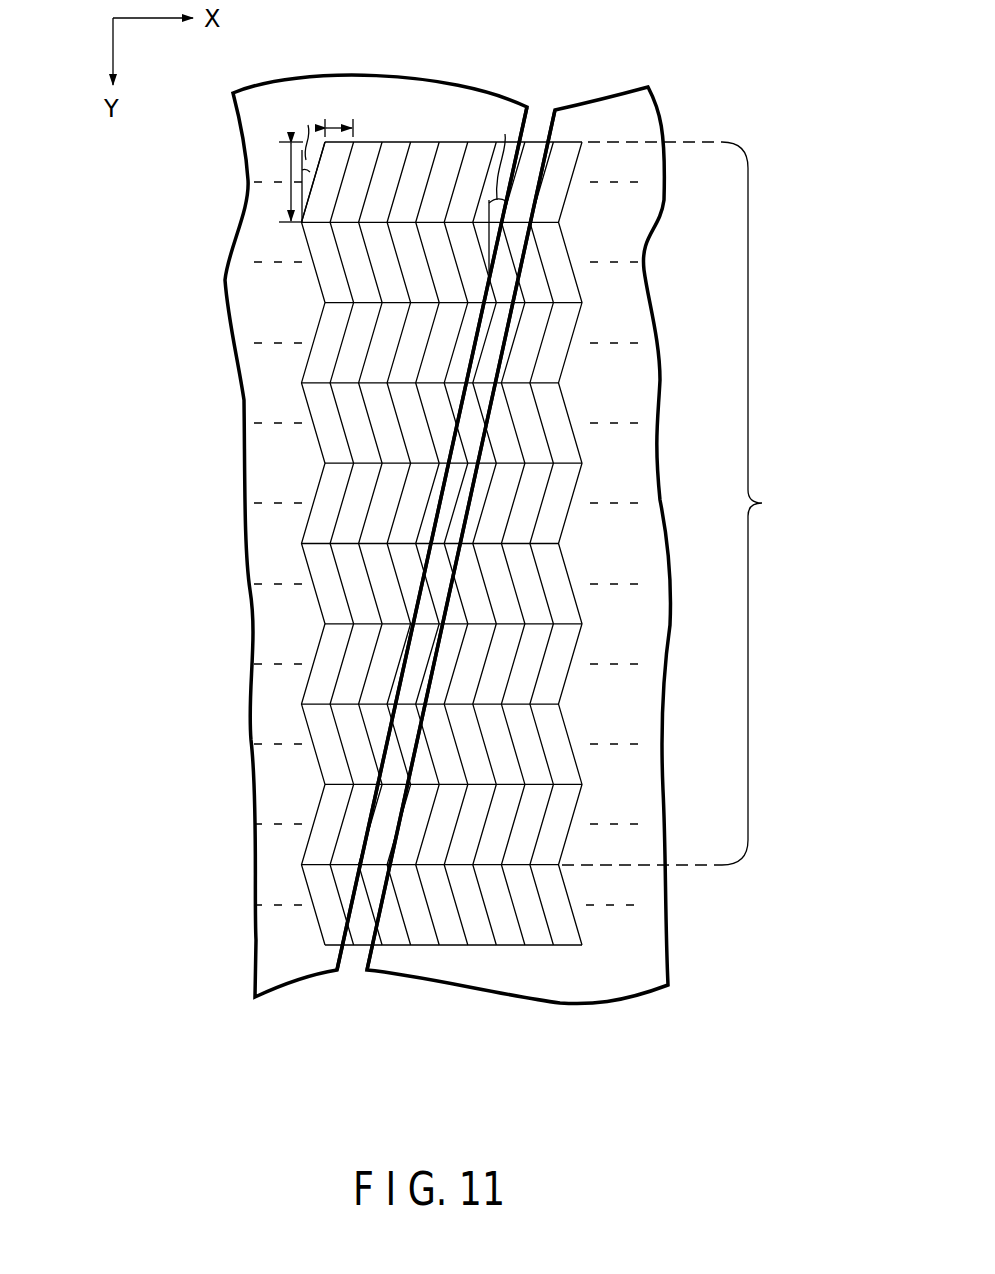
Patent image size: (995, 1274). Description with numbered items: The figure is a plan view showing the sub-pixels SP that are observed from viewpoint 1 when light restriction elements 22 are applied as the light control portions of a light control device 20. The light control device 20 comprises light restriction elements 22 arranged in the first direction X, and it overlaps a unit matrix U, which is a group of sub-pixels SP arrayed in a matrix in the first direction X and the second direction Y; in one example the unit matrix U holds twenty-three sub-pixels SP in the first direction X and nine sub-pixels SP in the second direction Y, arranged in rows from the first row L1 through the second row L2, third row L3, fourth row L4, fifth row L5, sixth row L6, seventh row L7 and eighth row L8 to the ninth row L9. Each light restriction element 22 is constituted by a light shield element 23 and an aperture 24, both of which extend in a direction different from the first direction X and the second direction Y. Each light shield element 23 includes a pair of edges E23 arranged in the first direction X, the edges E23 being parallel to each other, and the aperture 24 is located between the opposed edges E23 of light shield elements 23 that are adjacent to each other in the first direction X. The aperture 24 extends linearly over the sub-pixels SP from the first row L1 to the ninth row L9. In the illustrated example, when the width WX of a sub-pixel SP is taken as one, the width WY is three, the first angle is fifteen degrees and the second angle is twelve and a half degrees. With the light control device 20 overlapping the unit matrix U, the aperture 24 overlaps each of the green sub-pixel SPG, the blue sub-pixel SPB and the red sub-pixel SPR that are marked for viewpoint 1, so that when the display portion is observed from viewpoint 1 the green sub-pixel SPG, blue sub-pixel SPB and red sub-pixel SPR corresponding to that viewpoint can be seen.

The light control device 20 is at (504, 1052).
The light restriction element 22 is at (368, 1055).
The light shield element 23 is at (290, 975).
The aperture 24 is at (351, 972).
The edge E23 is at (505, 238).
The green sub-pixel SPG is at (540, 142).
The blue sub-pixel SPB is at (470, 403).
The red sub-pixel SPR is at (415, 645).
The viewpoint 1 is at (472, 543).
The unit matrix U is at (678, 503).
The first row L1 is at (213, 182).
The second row L2 is at (213, 262).
The third row L3 is at (213, 343).
The fourth row L4 is at (213, 423).
The fifth row L5 is at (213, 503).
The sixth row L6 is at (213, 584).
The seventh row L7 is at (213, 664).
The eighth row L8 is at (213, 744).
The ninth row L9 is at (213, 824).
The width WX is at (341, 127).
The width WY is at (291, 178).
The sub-pixel SP is at (325, 141).